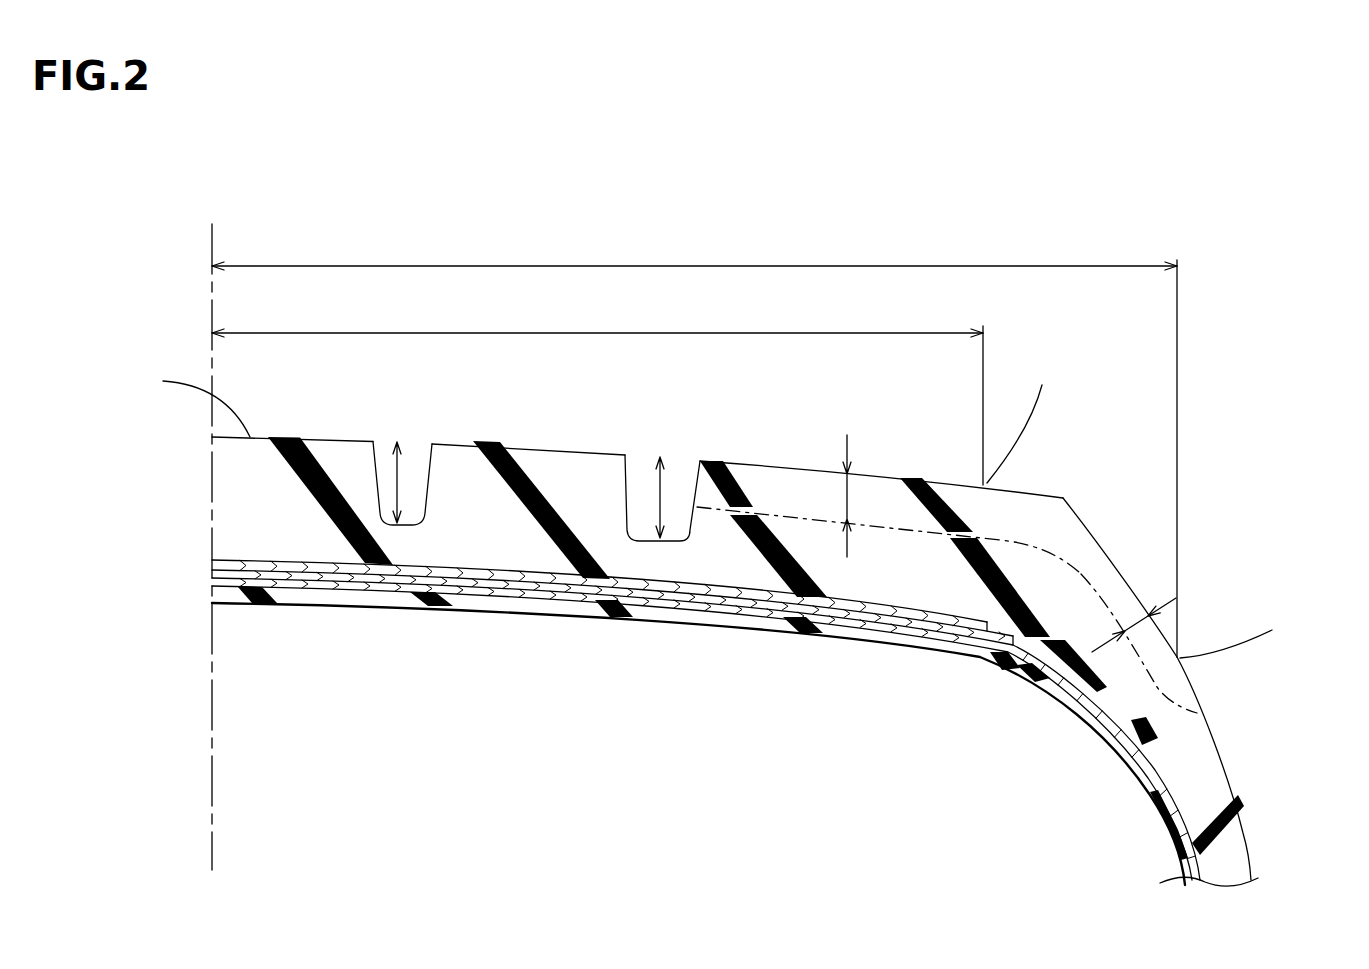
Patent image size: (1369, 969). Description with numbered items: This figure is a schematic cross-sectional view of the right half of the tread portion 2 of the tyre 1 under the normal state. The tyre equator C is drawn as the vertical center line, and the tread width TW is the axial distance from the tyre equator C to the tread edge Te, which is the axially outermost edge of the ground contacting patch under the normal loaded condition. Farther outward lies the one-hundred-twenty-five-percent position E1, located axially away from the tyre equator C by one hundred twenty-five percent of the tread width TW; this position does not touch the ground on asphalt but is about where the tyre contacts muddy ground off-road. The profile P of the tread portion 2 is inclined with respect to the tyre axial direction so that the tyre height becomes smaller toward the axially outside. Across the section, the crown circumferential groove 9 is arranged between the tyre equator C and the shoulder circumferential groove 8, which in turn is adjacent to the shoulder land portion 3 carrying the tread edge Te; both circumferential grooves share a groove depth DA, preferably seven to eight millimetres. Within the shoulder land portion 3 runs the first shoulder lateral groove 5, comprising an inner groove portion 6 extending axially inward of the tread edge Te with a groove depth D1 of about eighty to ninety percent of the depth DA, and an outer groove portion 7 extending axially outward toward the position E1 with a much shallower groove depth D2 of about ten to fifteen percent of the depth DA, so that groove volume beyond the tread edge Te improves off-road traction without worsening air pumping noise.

The tyre 1 is at (1320, 243).
The tread portion 2 is at (1226, 276).
The shoulder land portion 3 is at (926, 427).
The first shoulder lateral groove 5 is at (1040, 471).
The inner groove portion 6 is at (803, 490).
The outer groove portion 7 is at (1088, 602).
The shoulder circumferential groove 8 is at (682, 473).
The crown circumferential groove 9 is at (418, 462).
The tyre equator C is at (213, 530).
The profile P is at (195, 401).
The tread width TW is at (694, 444).
The tread edge Te is at (1021, 419).
The groove depth DA is at (397, 485).
The groove depth of inner groove portion D1 is at (853, 497).
The groove depth of outer groove portion D2 is at (1132, 614).
The 125% position E1 is at (1244, 639).